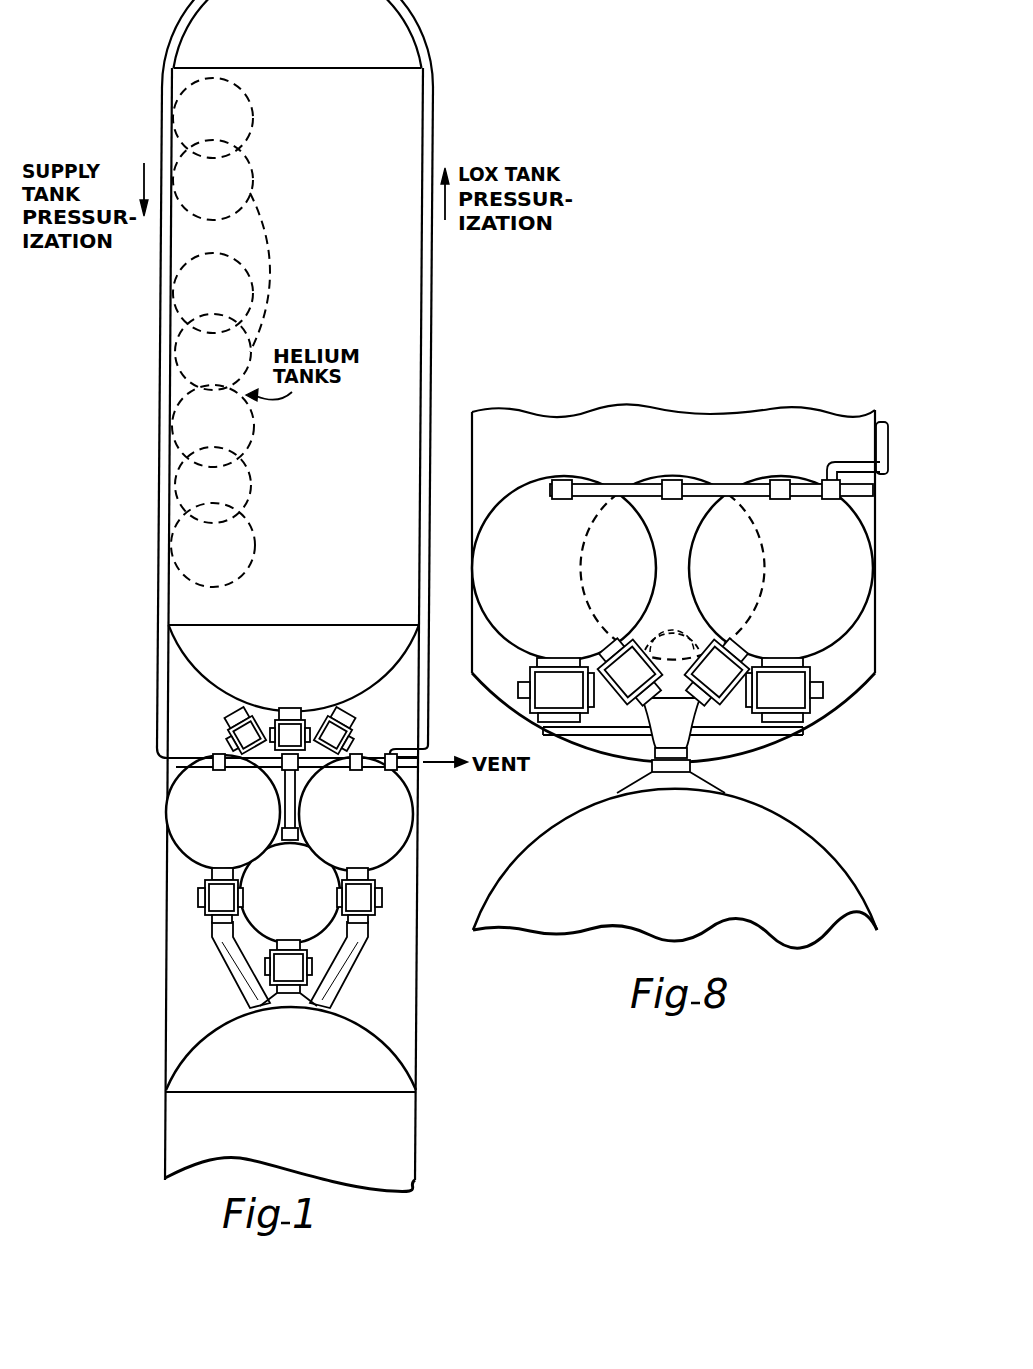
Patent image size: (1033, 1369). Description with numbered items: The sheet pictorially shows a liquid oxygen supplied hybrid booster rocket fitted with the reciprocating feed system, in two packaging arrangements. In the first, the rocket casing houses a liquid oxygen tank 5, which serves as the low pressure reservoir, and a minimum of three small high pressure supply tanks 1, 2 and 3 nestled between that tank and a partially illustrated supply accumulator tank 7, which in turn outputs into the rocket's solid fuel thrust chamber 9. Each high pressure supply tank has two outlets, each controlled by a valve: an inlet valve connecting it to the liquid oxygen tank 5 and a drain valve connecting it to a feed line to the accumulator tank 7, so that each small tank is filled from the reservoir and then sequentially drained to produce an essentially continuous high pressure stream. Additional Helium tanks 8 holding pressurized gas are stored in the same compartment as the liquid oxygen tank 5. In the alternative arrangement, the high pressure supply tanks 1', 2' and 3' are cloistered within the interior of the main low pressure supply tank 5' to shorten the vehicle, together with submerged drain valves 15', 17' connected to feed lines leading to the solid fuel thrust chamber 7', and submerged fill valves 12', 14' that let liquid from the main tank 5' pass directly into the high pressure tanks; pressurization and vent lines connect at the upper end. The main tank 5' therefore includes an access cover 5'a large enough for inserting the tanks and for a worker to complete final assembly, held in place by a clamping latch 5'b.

In FIG. 1, the liquid oxygen tank 5 is at (295, 590).
In FIG. 1, the Helium tanks 8 is at (258, 292).
In FIG. 1, the high pressure supply tank 3 is at (223, 812).
In FIG. 1, the high pressure supply tank 2 is at (356, 814).
In FIG. 1, the high pressure supply tank 1 is at (290, 893).
In FIG. 1, the supply accumulator tank 7 is at (291, 1049).
In FIG. 1, the solid fuel thrust chamber 9 is at (292, 1133).
In FIG. 8, the main supply tank 5' is at (680, 538).
In FIG. 8, the access cover 5'a is at (673, 731).
In FIG. 8, the clamping latch 5'b is at (706, 741).
In FIG. 8, the high pressure supply tank 3' is at (564, 568).
In FIG. 8, the high pressure supply tank 2' is at (781, 568).
In FIG. 8, the high pressure supply tank 1' is at (673, 568).
In FIG. 8, the submerged fill valve 14' is at (556, 690).
In FIG. 8, the submerged fill valve 12' is at (784, 690).
In FIG. 8, the submerged drain valve 17' is at (630, 672).
In FIG. 8, the submerged drain valve 15' is at (717, 672).
In FIG. 8, the solid fuel thrust chamber 7' is at (675, 869).